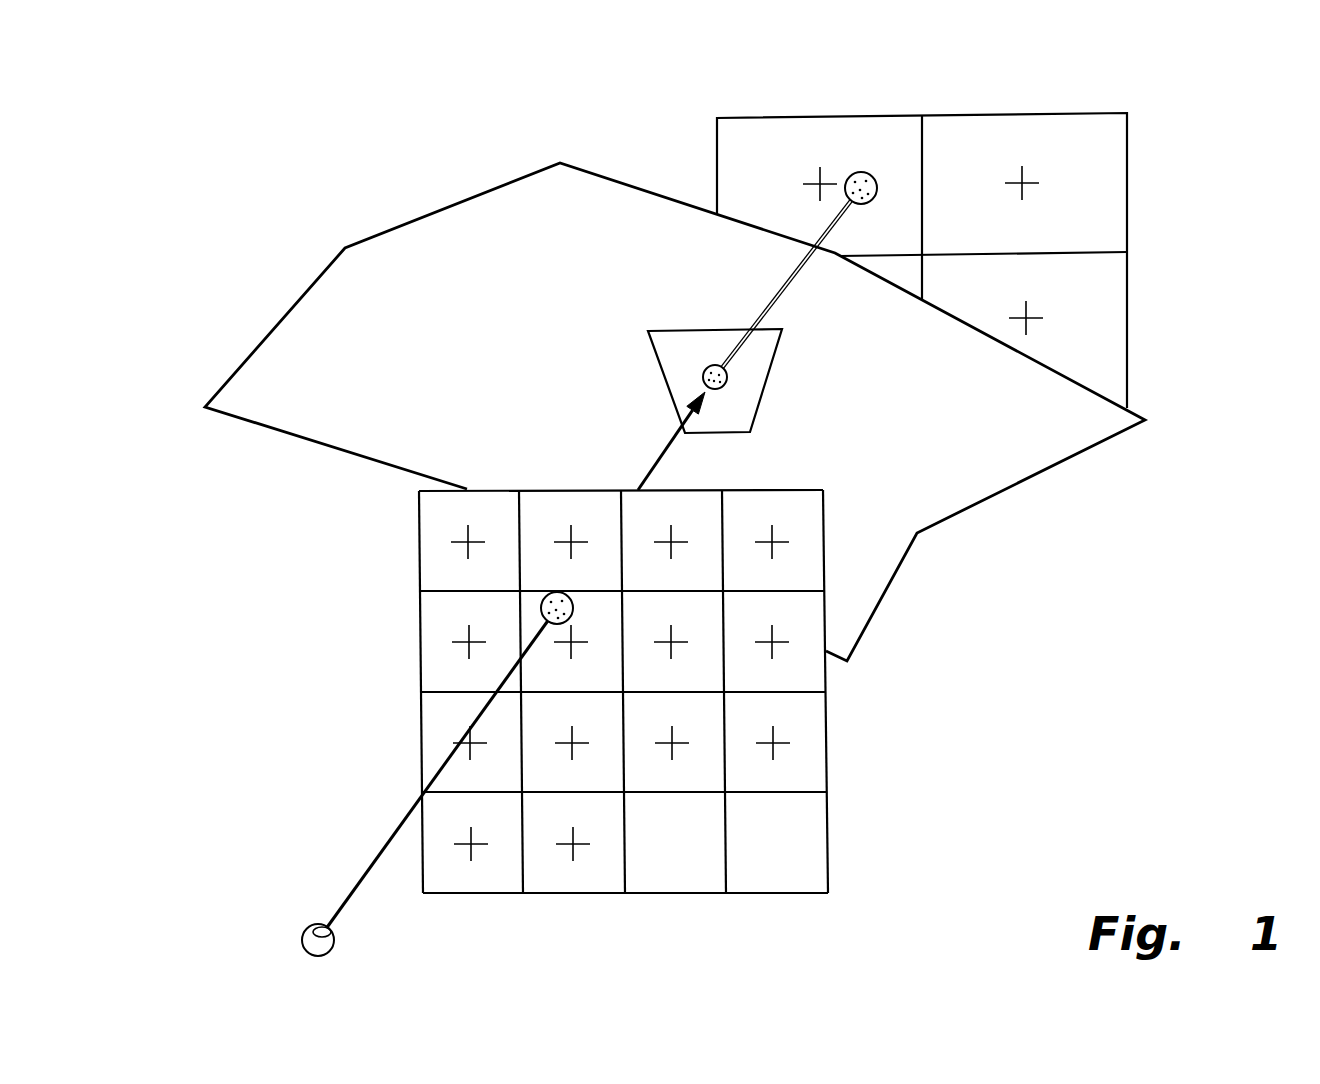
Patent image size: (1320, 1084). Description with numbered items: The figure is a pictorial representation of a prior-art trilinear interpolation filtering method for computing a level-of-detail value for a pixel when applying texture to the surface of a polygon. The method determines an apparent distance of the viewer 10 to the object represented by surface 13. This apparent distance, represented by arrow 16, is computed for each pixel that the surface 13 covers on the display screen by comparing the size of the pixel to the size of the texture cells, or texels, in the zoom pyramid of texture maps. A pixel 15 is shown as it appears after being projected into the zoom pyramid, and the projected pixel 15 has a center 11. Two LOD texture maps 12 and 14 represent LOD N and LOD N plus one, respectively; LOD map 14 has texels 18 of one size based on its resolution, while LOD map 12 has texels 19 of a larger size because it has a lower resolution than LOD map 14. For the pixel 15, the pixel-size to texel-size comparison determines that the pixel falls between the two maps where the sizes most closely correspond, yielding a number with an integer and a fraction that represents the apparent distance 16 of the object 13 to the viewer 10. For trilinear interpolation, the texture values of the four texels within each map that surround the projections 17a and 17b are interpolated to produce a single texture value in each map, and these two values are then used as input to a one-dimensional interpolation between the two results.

The viewer 10 is at (302, 940).
The center 11 is at (703, 370).
The LOD texture map 12 is at (1127, 212).
The surface 13 is at (437, 213).
The LOD texture map 14 is at (830, 866).
The pixel 15 is at (670, 394).
The arrow 16 is at (655, 465).
The projection 17a is at (540, 605).
The projection 17b is at (868, 173).
The texels 18 is at (782, 748).
The texels 19 is at (1045, 180).